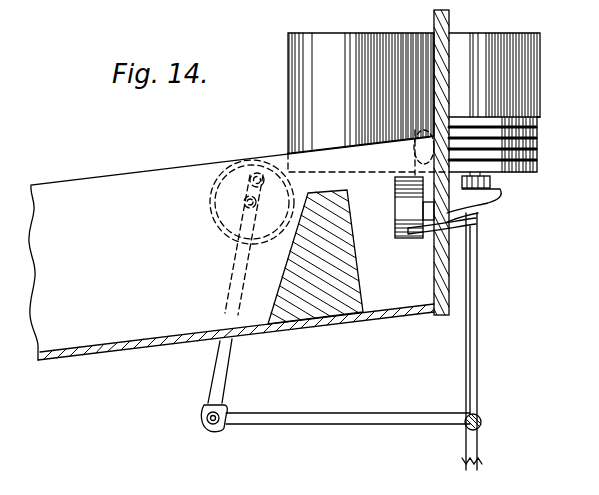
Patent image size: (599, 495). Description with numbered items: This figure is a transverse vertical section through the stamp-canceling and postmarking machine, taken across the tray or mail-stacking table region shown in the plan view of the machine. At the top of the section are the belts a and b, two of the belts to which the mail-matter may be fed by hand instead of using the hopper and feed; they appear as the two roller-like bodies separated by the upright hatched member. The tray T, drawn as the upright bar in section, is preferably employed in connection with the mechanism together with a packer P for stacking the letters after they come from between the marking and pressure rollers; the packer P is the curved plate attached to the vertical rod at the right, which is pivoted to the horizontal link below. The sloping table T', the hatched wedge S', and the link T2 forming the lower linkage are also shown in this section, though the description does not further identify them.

The tray T is at (463, 159).
The table T' is at (239, 245).
The link / lever T2 is at (353, 323).
The wedge block S' is at (323, 257).
The packer P is at (480, 228).
The belt a is at (494, 102).
The belt b is at (361, 93).